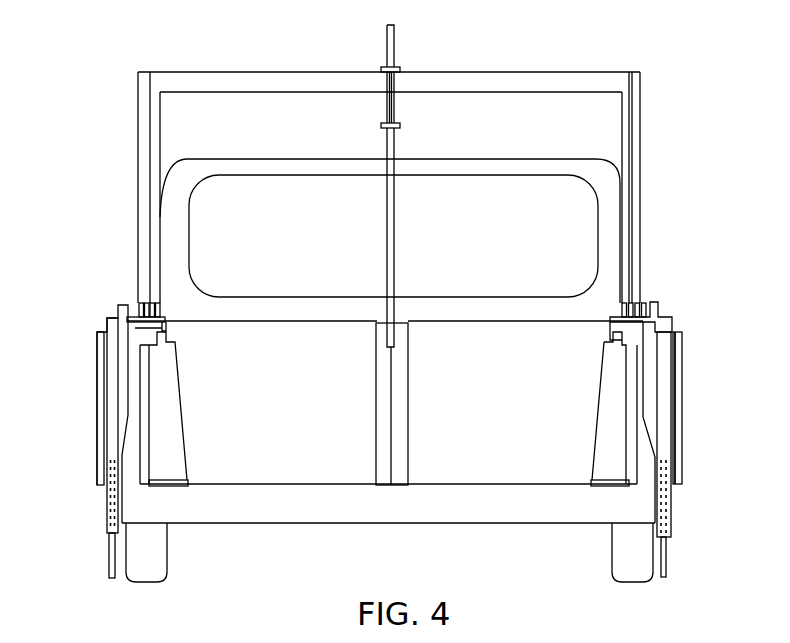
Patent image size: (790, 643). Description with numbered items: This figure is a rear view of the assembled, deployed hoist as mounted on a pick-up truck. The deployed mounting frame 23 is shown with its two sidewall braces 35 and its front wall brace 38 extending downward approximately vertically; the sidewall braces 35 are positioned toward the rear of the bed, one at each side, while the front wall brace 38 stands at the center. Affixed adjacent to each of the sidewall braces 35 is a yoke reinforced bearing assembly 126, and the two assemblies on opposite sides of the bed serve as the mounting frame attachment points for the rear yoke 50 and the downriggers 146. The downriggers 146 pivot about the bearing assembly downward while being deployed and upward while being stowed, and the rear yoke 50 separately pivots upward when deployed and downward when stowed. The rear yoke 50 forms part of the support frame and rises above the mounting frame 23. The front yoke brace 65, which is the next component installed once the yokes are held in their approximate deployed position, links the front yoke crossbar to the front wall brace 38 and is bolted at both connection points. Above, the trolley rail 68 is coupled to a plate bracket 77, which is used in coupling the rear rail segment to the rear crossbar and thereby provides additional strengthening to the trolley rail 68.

The plate bracket 77 is at (390, 43).
The trolley rail 68 is at (395, 82).
The front yoke brace 65 is at (390, 152).
The rear yoke 50 is at (603, 80).
The yoke reinforced bearing assembly 126 is at (138, 303).
The mounting frame 23 is at (672, 325).
The downriggers 146 is at (663, 377).
The sidewall braces 35 is at (165, 442).
The front wall brace 38 is at (398, 417).